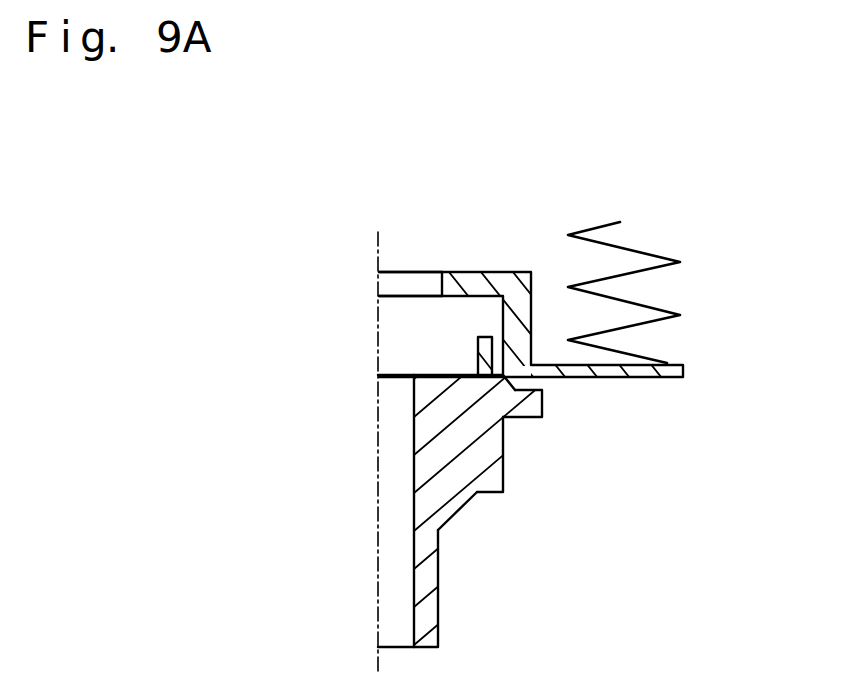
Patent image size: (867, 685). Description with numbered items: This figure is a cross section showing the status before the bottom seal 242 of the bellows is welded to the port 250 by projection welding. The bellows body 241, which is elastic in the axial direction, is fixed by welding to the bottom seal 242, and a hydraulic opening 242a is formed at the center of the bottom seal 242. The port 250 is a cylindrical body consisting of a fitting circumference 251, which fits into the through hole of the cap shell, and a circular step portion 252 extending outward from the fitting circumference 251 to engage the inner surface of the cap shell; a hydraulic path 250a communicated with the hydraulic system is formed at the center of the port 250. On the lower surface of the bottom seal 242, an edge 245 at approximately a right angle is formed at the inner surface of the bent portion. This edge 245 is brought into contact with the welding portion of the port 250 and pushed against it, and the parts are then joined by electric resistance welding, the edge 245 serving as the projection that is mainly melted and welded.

The bellows body 241 is at (642, 250).
The bottom seal 242 is at (490, 290).
The hydraulic opening 242a is at (403, 287).
The edge 245 is at (500, 365).
The port 250 is at (438, 617).
The hydraulic path 250a is at (390, 508).
The fitting circumference 251 is at (458, 512).
The step portion 252 is at (490, 493).